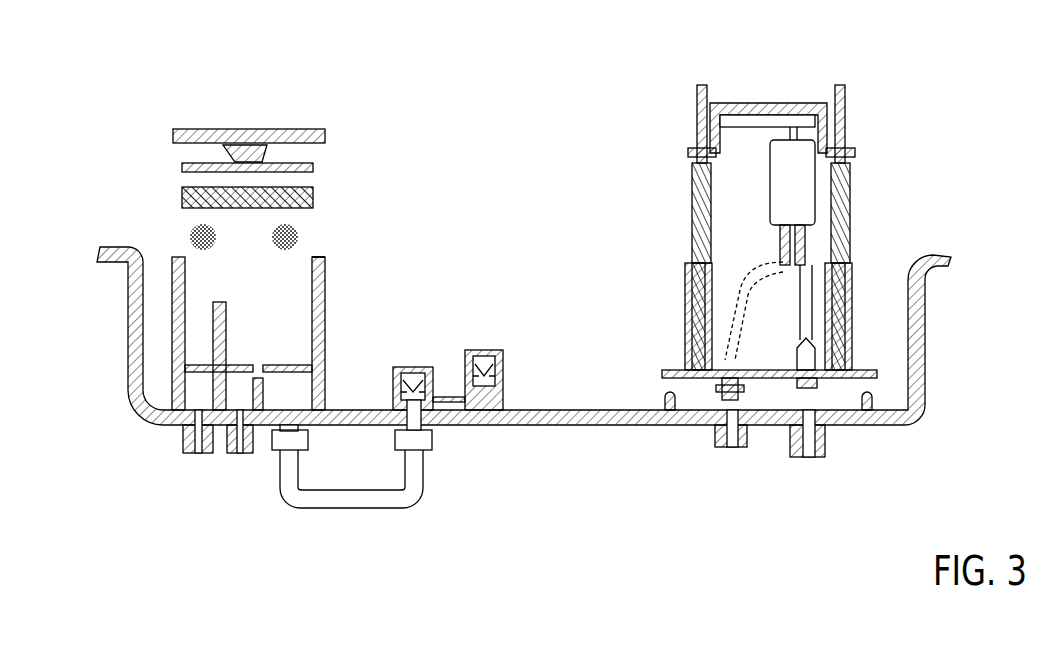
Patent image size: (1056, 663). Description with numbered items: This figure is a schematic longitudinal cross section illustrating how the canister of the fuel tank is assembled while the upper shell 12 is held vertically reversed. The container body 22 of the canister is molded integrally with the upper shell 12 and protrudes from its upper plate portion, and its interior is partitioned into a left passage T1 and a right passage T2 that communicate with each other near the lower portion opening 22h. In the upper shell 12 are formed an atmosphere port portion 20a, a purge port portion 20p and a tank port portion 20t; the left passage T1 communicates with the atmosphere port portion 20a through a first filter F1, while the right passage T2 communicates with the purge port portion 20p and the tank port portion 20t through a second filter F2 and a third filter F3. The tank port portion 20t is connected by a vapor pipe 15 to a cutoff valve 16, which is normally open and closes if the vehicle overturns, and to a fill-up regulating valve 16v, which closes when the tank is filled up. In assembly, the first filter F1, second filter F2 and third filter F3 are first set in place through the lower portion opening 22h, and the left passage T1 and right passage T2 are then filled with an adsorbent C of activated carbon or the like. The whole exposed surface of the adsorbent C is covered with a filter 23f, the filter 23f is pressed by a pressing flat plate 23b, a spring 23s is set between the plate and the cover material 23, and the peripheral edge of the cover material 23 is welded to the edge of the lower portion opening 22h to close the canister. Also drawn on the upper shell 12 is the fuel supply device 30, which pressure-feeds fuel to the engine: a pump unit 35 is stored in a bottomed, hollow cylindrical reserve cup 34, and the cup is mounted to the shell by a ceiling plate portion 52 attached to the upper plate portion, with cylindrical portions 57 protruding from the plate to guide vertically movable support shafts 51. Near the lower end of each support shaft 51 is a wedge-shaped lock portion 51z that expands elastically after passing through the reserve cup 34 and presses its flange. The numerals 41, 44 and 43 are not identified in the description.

The upper shell 12 is at (932, 380).
The vapor pipe 15 is at (403, 498).
The cutoff valve 16 is at (415, 365).
The fill-up regulating valve 16v is at (482, 348).
The atmosphere port portion 20a is at (183, 441).
The purge port portion 20p is at (241, 456).
The tank port portion 20t is at (262, 428).
The container body 22 is at (331, 330).
The lower portion opening 22h is at (303, 253).
The cover material 23 is at (312, 131).
The spring 23s is at (283, 152).
The pressing flat plate 23b is at (312, 169).
The filter 23f is at (318, 198).
The adsorbent C is at (298, 237).
The left passage T1 is at (200, 349).
The right passage T2 is at (270, 321).
The first filter F1 is at (196, 381).
The second filter F2 is at (235, 364).
The third filter F3 is at (297, 357).
The fuel supply device 30 is at (822, 209).
The reserve cup 34 is at (748, 103).
The pump unit 35 is at (775, 186).
The support shaft 51 is at (851, 160).
The lock portion 51z is at (848, 110).
The cylindrical portion 57 is at (853, 280).
The positioning post 41 is at (665, 400).
The ceiling plate portion 52 is at (768, 380).
The outlet port 44 is at (720, 440).
The inlet port 43 is at (823, 442).